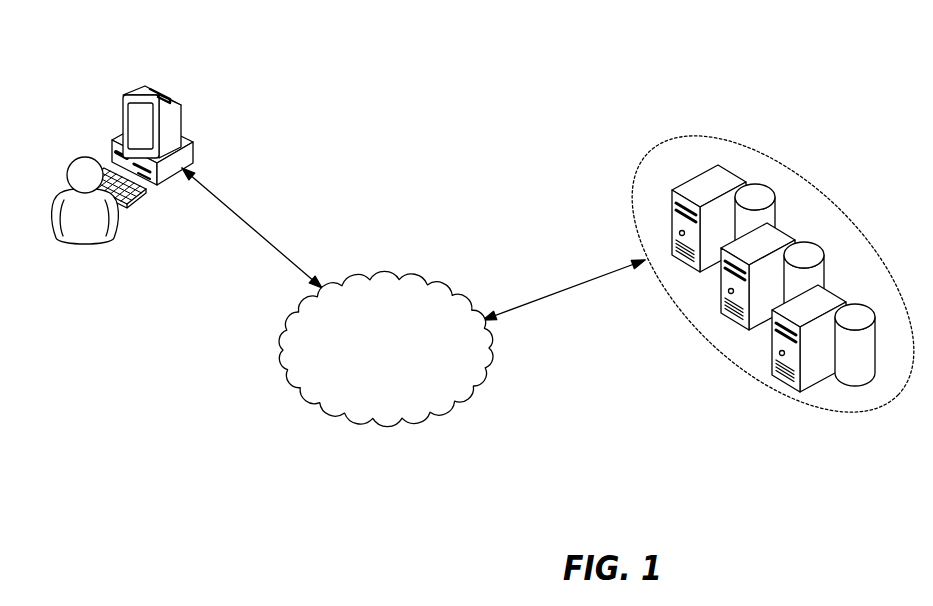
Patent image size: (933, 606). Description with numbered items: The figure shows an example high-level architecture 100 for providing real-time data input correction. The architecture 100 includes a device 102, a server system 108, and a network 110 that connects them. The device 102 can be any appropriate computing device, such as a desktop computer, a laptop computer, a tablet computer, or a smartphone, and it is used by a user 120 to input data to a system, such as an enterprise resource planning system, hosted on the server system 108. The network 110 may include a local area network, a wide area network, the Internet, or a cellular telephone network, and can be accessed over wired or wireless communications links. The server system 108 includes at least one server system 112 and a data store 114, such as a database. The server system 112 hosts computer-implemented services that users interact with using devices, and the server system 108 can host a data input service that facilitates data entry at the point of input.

The high-level architecture 100 is at (470, 233).
The device 102 is at (180, 108).
The server system 108 is at (758, 274).
The network 110 is at (385, 278).
The server system 112 is at (700, 172).
The data store 114 is at (752, 183).
The user 120 is at (76, 157).